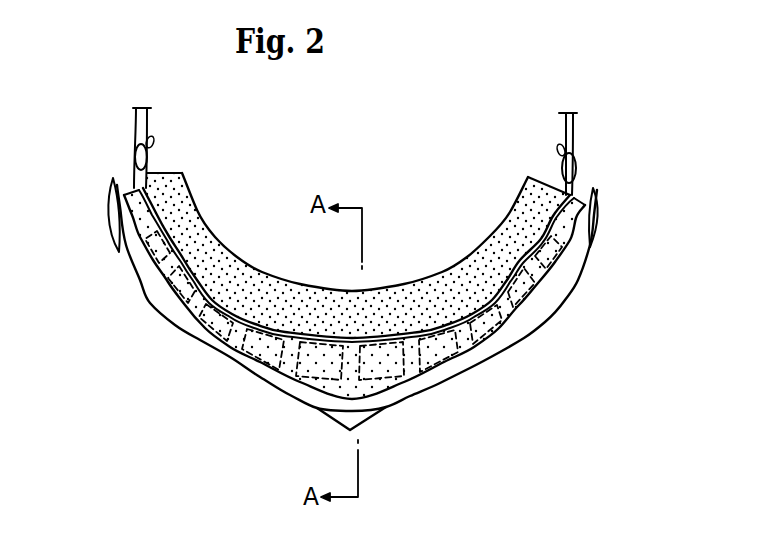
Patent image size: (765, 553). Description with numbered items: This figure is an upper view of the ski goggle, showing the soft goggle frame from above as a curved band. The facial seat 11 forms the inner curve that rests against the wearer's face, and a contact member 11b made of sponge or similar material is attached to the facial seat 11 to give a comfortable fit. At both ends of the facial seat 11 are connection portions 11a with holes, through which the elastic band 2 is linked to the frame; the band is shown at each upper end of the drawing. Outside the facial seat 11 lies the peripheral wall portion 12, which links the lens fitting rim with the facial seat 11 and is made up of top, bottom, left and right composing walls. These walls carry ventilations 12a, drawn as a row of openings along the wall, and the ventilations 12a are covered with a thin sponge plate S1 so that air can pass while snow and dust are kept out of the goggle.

The elastic band 2 is at (576, 133).
The facial seat 11 is at (538, 241).
The connection portions 11a is at (133, 168).
The contact member 11b is at (256, 277).
The peripheral wall portion 12 is at (492, 333).
The ventilations 12a is at (441, 362).
The sponge plate S1 is at (382, 392).